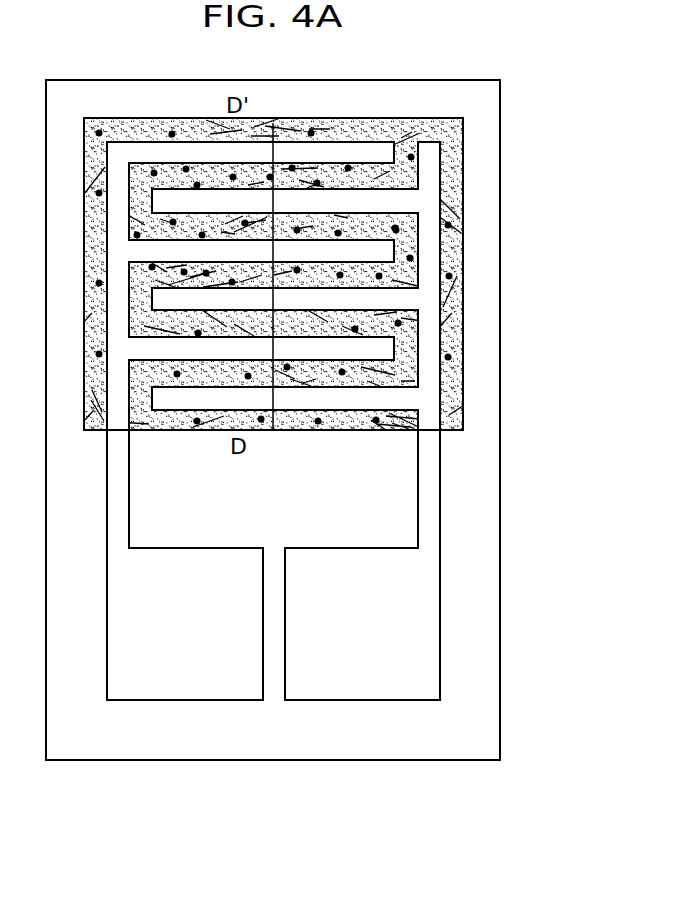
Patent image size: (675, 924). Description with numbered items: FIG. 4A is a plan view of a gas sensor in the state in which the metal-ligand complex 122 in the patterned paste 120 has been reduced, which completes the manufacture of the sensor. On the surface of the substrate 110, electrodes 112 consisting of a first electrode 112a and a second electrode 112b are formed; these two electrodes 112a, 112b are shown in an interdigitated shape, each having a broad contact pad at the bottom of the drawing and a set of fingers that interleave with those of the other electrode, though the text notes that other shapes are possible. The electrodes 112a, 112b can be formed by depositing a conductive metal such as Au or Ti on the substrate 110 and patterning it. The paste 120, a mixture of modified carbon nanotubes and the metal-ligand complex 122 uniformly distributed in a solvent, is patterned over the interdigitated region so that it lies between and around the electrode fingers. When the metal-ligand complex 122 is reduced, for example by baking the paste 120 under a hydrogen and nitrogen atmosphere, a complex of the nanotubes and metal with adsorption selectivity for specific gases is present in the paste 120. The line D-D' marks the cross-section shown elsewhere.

The substrate 110 is at (483, 563).
The electrodes 112 is at (273, 495).
The first electrode 112a is at (183, 680).
The second electrode 112b is at (163, 807).
The paste 120 is at (457, 145).
The metal-ligand complex 122 is at (405, 323).